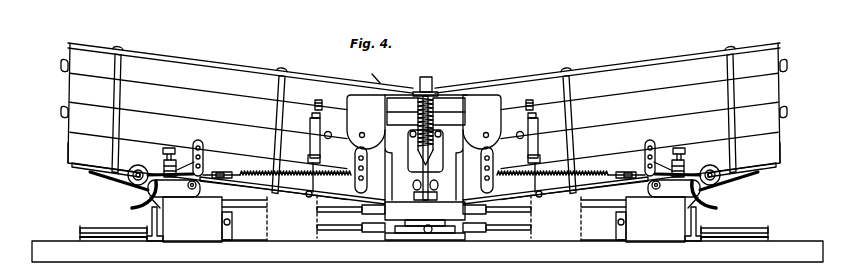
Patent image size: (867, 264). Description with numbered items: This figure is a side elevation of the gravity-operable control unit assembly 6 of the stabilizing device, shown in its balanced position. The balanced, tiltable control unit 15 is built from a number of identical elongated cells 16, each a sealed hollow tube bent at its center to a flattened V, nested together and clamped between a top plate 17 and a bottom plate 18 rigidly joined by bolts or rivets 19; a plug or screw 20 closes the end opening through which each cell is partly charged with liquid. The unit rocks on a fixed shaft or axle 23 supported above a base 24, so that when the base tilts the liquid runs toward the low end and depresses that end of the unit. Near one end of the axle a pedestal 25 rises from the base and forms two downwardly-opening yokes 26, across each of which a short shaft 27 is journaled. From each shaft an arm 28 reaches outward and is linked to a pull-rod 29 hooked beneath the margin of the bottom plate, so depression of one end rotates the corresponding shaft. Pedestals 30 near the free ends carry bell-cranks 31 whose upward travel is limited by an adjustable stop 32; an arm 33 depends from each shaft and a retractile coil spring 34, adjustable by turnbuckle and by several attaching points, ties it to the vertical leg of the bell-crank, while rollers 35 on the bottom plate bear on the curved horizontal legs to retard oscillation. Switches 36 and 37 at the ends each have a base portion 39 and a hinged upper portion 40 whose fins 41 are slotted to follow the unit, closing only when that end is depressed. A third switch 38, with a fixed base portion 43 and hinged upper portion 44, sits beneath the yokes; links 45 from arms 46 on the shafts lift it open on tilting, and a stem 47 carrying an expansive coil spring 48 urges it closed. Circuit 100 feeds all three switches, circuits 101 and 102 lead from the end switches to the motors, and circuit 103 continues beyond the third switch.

The machine 6 is at (370, 72).
The balanced tiltable control unit 15 is at (212, 82).
The elongated cells 16 is at (424, 113).
The top plate 17 is at (156, 54).
The bottom plate 18 is at (68, 164).
The bolts or rivets 19 is at (116, 92).
The plug or screw 20 is at (65, 110).
The fixed shaft or axle 23 is at (432, 236).
The base 24 is at (427, 251).
The pedestal 25 is at (421, 172).
The yokes 26 is at (424, 147).
The short shaft 27 is at (424, 129).
The arm 28 is at (330, 131).
The pull-rod 29 is at (315, 108).
The pedestals 30 is at (424, 219).
The bell-crank 31 is at (424, 194).
The adjustable stop 32 is at (170, 148).
The arm 33 is at (356, 160).
The retractile coil spring 34 is at (258, 172).
The rollers 35 is at (139, 165).
The switch 36 is at (232, 223).
The switch 37 is at (616, 224).
The switch 38 is at (410, 228).
The base portion 39 is at (152, 222).
The upper portion 40 is at (118, 190).
The fins 41 is at (95, 170).
The base portion 43 is at (455, 238).
The upper portion 44 is at (425, 211).
The links 45 is at (412, 158).
The arms 46 is at (426, 124).
The stem 47 is at (432, 80).
The expansive coil spring 48 is at (434, 108).
The circuit 100 is at (317, 228).
The circuit 101 is at (80, 230).
The circuit 102 is at (768, 229).
The circuit 103 is at (317, 209).